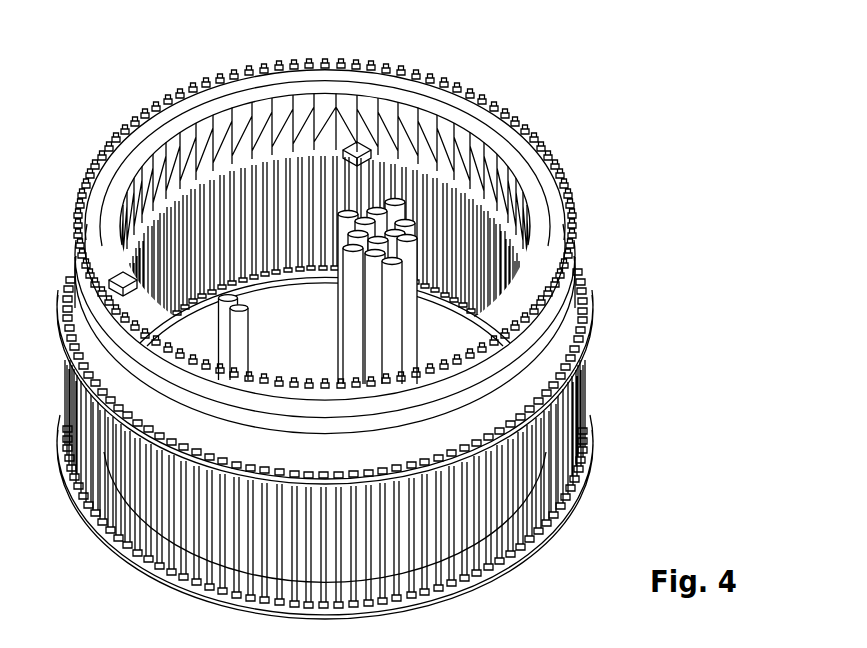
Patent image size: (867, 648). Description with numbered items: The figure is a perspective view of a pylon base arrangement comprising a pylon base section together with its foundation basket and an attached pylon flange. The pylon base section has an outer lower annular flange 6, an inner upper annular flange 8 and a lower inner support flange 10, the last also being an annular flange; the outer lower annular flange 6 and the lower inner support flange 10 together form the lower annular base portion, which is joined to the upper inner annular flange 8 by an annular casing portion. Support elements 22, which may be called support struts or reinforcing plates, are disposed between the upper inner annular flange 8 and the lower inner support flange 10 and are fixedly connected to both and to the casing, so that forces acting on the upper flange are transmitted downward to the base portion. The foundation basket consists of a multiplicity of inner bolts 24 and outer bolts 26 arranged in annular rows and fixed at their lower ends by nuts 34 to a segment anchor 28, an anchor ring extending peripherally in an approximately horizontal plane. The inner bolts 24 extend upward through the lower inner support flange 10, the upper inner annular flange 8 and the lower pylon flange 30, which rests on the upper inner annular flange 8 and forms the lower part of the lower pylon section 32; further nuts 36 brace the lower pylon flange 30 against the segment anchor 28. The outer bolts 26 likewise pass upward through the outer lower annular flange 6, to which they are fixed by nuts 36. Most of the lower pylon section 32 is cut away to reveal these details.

The outer lower annular flange 6 is at (371, 351).
The inner upper annular flange 8 is at (313, 223).
The lower inner support flange 10 is at (367, 316).
The support elements 22 is at (232, 126).
The inner bolts 24 is at (452, 203).
The outer bolts 26 is at (552, 452).
The segment anchor 28 is at (547, 520).
The lower pylon flange 30 is at (263, 85).
The lower pylon section 32 is at (112, 145).
The nuts 34 is at (496, 556).
The further nuts 36 is at (530, 138).